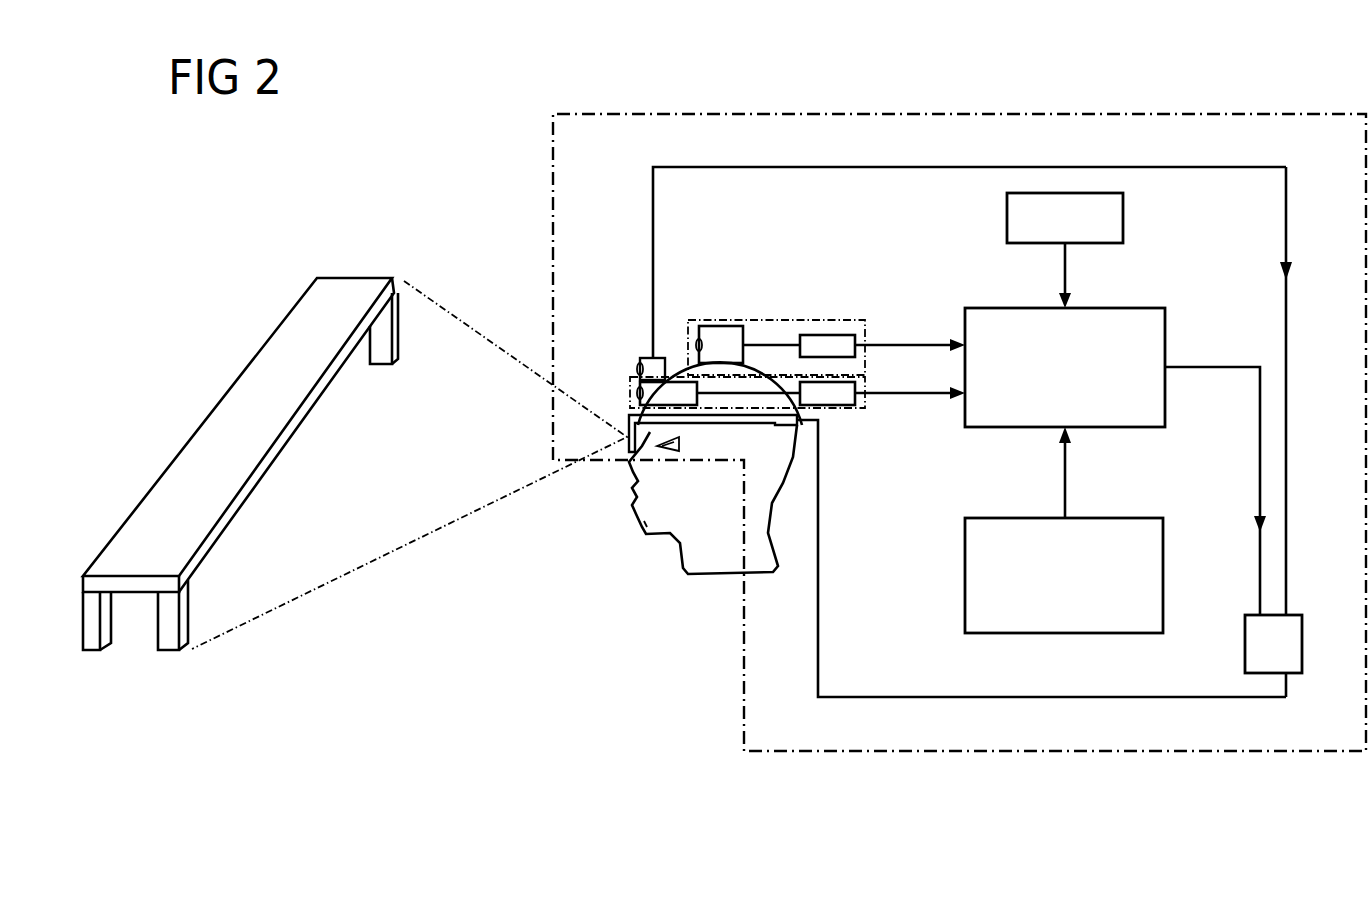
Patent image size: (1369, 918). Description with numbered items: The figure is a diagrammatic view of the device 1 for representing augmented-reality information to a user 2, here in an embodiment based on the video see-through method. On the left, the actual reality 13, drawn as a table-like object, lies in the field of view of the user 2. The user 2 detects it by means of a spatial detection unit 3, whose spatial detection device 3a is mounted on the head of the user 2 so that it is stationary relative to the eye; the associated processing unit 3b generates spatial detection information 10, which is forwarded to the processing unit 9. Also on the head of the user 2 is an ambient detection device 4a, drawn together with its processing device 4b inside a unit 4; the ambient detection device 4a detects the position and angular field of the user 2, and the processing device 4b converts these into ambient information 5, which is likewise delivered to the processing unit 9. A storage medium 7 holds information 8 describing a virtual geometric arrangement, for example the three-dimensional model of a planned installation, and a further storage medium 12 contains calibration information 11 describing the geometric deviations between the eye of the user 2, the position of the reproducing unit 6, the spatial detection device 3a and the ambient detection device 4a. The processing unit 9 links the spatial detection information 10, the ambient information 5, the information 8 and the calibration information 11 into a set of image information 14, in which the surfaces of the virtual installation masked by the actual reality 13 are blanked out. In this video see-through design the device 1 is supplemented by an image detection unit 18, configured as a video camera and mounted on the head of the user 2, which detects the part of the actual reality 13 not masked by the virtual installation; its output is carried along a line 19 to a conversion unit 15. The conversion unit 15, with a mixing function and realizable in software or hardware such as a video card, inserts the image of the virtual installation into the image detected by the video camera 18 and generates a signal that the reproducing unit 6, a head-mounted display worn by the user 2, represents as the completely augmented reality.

The device 1 is at (1027, 763).
The user 2 is at (643, 536).
The spatial detection unit 3 is at (715, 408).
The spatial detection device 3a is at (640, 395).
The processing unit 3b is at (845, 405).
The position sensor unit 4 is at (771, 303).
The ambient detection device 4a is at (716, 342).
The processing device 4b is at (818, 352).
The ambient information 5 is at (902, 350).
The reproducing unit 6 is at (622, 450).
The storage medium 7 is at (1140, 585).
The information 8 is at (1050, 475).
The processing unit 9 is at (1145, 352).
The spatial detection information 10 is at (905, 400).
The calibration information 11 is at (1050, 278).
The further storage medium 12 is at (1007, 230).
The actual reality 13 is at (344, 292).
The image information 14 is at (1250, 485).
The conversion unit 15 is at (1295, 623).
The image detection unit 18 is at (635, 360).
The data line 19 is at (1285, 220).